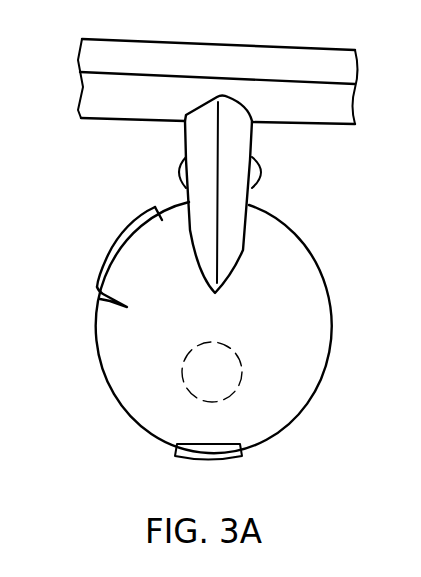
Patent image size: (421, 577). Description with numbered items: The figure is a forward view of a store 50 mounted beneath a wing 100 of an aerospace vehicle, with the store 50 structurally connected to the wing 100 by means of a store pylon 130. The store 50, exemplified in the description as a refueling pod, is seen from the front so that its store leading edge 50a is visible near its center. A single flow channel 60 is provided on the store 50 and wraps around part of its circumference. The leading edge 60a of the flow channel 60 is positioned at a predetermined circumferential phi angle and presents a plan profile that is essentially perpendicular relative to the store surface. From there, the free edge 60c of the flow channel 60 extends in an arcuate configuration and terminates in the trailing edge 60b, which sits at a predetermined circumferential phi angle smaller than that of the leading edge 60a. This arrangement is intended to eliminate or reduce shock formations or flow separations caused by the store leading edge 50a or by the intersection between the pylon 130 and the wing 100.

The wing 100 is at (298, 57).
The store pylon 130 is at (247, 141).
The store 50 is at (326, 283).
The store leading edge 50a is at (208, 378).
The flow channel 60 is at (101, 255).
The leading edge of flow channel 60a is at (87, 319).
The trailing edge 60b is at (160, 207).
The free edge of flow channel 60c is at (114, 240).